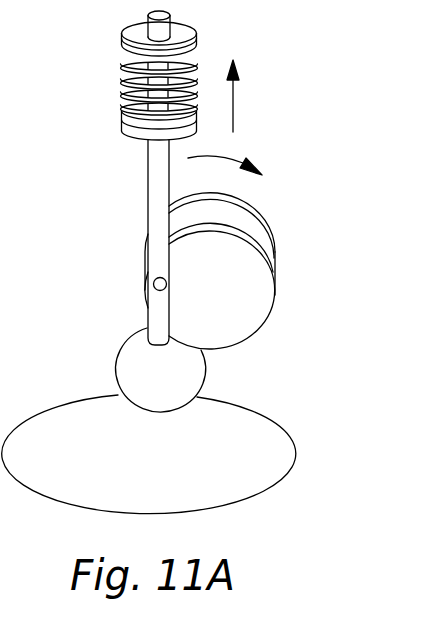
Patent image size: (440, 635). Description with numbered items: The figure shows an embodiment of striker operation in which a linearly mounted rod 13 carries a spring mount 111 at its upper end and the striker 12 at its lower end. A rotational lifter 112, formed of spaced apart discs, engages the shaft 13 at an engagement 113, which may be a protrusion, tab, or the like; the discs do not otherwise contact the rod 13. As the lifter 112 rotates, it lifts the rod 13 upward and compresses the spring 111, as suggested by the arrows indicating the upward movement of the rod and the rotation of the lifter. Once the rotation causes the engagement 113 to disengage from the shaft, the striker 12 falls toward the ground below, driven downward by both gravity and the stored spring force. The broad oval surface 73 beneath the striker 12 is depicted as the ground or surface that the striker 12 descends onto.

The spring / elastic member 111 is at (130, 68).
The rod 13 is at (147, 183).
The disc / wheel 112 is at (255, 293).
The hole 113 is at (150, 291).
The ball 12 is at (113, 369).
The base 73 is at (250, 432).